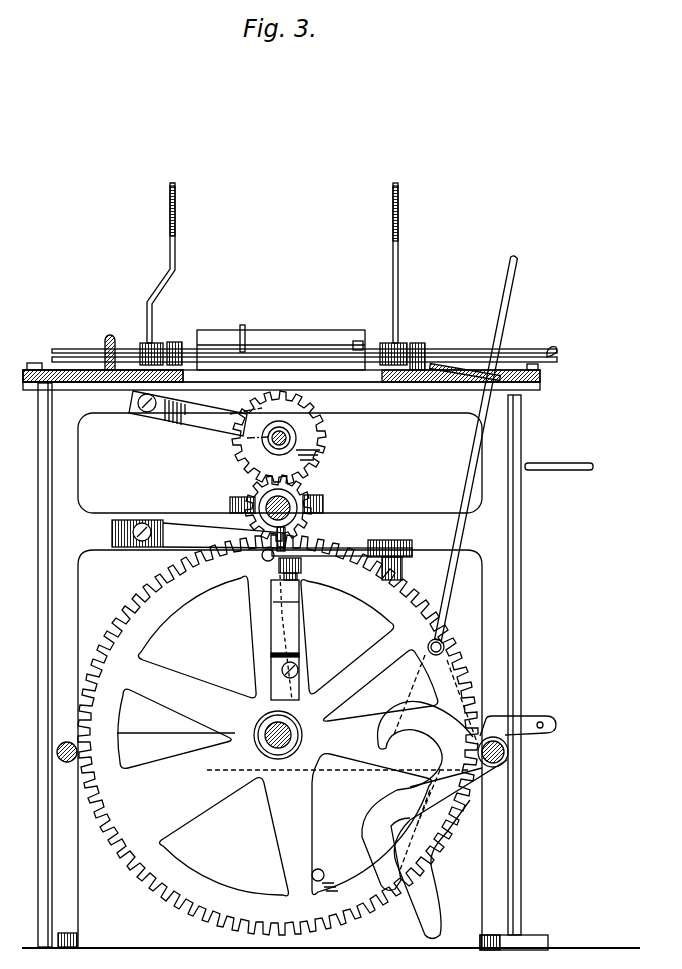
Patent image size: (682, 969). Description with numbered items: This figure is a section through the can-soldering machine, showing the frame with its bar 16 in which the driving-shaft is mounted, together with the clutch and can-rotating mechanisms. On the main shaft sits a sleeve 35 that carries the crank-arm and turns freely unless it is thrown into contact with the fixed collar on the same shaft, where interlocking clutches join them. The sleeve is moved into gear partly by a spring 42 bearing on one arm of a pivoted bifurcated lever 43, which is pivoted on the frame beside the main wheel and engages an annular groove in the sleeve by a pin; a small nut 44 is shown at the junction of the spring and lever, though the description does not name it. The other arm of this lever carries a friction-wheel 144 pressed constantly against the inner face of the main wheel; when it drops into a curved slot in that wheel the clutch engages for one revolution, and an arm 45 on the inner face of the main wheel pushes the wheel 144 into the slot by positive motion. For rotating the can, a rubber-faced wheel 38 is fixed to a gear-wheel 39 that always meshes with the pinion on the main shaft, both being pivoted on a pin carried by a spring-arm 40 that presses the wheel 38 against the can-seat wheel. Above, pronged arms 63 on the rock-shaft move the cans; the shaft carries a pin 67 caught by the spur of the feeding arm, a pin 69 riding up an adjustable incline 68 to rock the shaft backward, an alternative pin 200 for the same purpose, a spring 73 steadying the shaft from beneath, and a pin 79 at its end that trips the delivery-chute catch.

The bar of the frame 16 is at (372, 565).
The arm 45 is at (297, 637).
The friction-wheel 144 is at (282, 570).
The pivoted bifurcated lever 43 is at (372, 540).
The spring 42 is at (172, 540).
The nut 44 is at (277, 542).
The sleeve 35 is at (300, 511).
The gear-wheel 39 is at (278, 438).
The rubber-faced wheel 38 is at (284, 430).
The spring-arm 40 is at (188, 413).
The pronged arms 63 is at (283, 263).
The pin 67 is at (246, 327).
The pin 200 is at (362, 340).
The pin 69 is at (109, 336).
The incline 68 is at (94, 371).
The spring 73 is at (450, 366).
The pin 79 is at (557, 350).